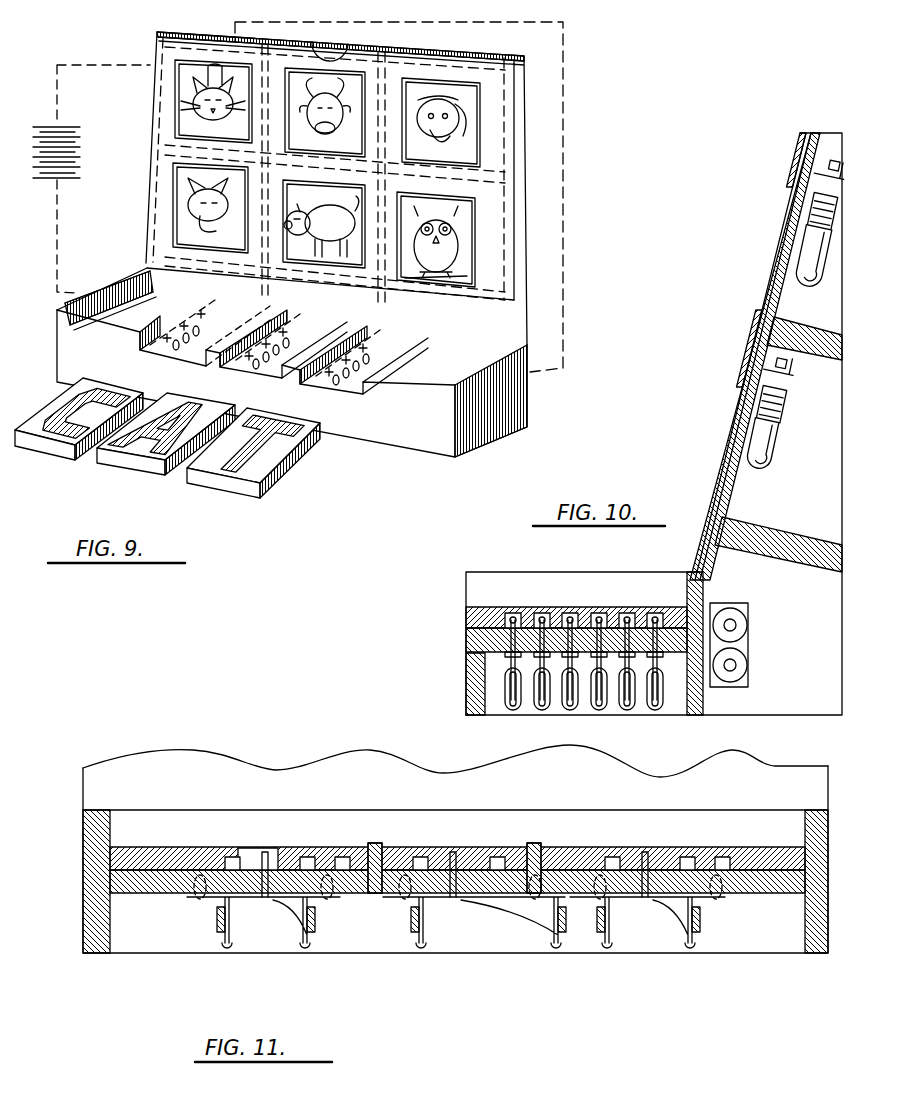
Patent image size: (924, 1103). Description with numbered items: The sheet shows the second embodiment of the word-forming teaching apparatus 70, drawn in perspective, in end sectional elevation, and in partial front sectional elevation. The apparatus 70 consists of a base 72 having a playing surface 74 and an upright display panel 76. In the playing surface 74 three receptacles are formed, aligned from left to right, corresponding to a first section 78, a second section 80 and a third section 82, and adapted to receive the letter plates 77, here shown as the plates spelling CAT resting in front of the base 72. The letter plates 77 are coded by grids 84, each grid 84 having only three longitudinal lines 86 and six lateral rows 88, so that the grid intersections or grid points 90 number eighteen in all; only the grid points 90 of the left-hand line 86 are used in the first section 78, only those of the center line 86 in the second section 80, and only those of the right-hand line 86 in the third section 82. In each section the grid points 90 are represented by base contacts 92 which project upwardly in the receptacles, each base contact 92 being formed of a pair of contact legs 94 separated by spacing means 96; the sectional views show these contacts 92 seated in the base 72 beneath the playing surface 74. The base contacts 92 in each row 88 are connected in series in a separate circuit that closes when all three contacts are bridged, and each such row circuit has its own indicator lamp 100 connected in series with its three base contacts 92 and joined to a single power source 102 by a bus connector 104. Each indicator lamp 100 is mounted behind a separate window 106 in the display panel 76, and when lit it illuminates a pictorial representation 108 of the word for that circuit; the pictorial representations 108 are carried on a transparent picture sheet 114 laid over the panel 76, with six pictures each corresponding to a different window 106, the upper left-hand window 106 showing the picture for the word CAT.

In FIG. 9, the apparatus of the second embodiment 70 is at (386, 185).
In FIG. 10, the apparatus of the second embodiment 70 is at (752, 356).
In FIG. 11, the apparatus of the second embodiment 70 is at (112, 766).
In FIG. 9, the base 72 is at (293, 374).
In FIG. 10, the base 72 is at (553, 643).
In FIG. 11, the base 72 is at (826, 883).
In FIG. 9, the playing surface 74 is at (407, 372).
In FIG. 10, the playing surface 74 is at (576, 629).
In FIG. 11, the playing surface 74 is at (749, 843).
In FIG. 9, the display panel 76 is at (500, 152).
In FIG. 10, the display panel 76 is at (750, 333).
In FIG. 9, the letter plates 77 is at (205, 476).
In FIG. 9, the first section 78 is at (165, 352).
In FIG. 11, the first section 78 is at (250, 850).
In FIG. 9, the second section 80 is at (273, 368).
In FIG. 11, the second section 80 is at (403, 872).
In FIG. 9, the third section 82 is at (338, 385).
In FIG. 11, the third section 82 is at (672, 850).
In FIG. 9, the grids 84 is at (188, 340).
In FIG. 9, the longitudinal lines 86 is at (189, 360).
In FIG. 9, the lateral rows 88 is at (240, 370).
In FIG. 9, the grid points 90 is at (365, 335).
In FIG. 9, the base contacts 92 is at (371, 372).
In FIG. 10, the base contacts 92 is at (584, 627).
In FIG. 11, the base contacts 92 is at (263, 846).
In FIG. 10, the contact legs 94 is at (599, 618).
In FIG. 11, the contact legs 94 is at (270, 850).
In FIG. 10, the spacing means 96 is at (584, 654).
In FIG. 11, the spacing means 96 is at (268, 898).
In FIG. 9, the indicator lamp 100 is at (173, 70).
In FIG. 10, the indicator lamp 100 is at (815, 263).
In FIG. 9, the power source 102 is at (82, 147).
In FIG. 10, the power source 102 is at (750, 662).
In FIG. 9, the bus connector 104 is at (565, 170).
In FIG. 10, the bus connector 104 is at (654, 424).
In FIG. 9, the window 106 is at (182, 107).
In FIG. 10, the window 106 is at (792, 190).
In FIG. 9, the pictorial representation 108 is at (460, 97).
In FIG. 9, the transparent picture sheet 114 is at (333, 40).
In FIG. 10, the transparent picture sheet 114 is at (786, 240).